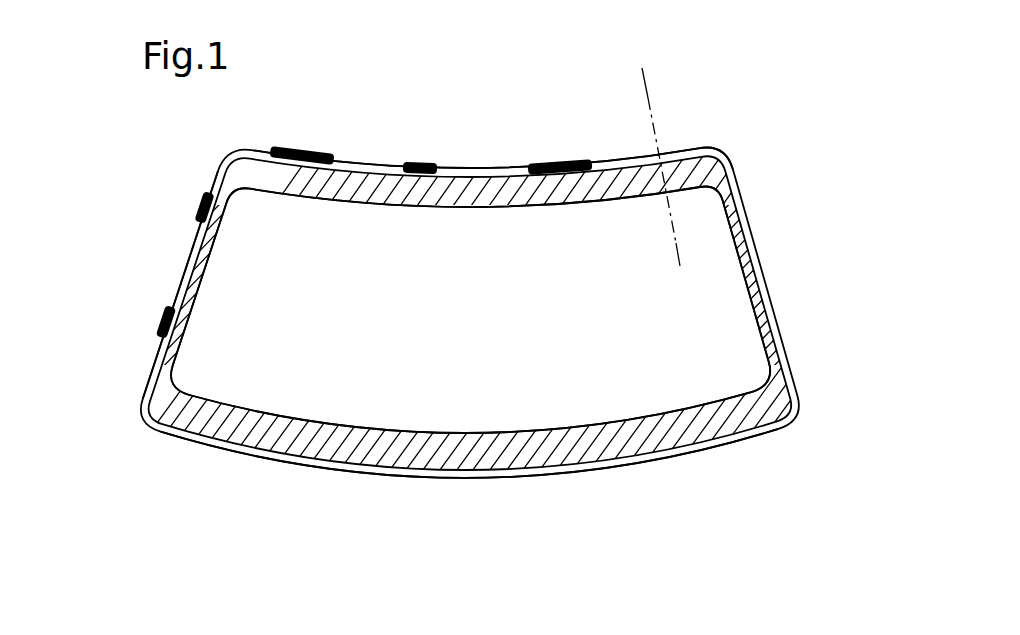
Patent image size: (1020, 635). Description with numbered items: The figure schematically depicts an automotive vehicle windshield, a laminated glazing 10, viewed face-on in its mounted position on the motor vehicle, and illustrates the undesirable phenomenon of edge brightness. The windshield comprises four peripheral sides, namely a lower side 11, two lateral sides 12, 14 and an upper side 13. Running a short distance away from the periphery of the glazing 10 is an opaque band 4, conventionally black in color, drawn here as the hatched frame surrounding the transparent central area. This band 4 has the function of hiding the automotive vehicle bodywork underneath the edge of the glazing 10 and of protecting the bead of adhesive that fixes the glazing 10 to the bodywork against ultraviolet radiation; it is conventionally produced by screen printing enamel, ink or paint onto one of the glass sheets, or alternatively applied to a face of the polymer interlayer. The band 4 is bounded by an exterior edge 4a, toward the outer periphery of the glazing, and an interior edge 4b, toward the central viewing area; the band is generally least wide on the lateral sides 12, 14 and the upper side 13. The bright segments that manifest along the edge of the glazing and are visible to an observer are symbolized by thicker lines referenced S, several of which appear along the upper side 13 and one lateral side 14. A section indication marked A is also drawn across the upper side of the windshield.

The opaque band 4 is at (724, 210).
The exterior edge of the band 4a is at (767, 289).
The interior edge of the band 4b is at (742, 293).
The laminated glazing 10 is at (603, 380).
The lower side 11 is at (410, 483).
The lateral side 12 is at (752, 235).
The upper side 13 is at (673, 149).
The lateral side 14 is at (153, 361).
The bright segments S is at (557, 158).
The section line A- A is at (644, 82).